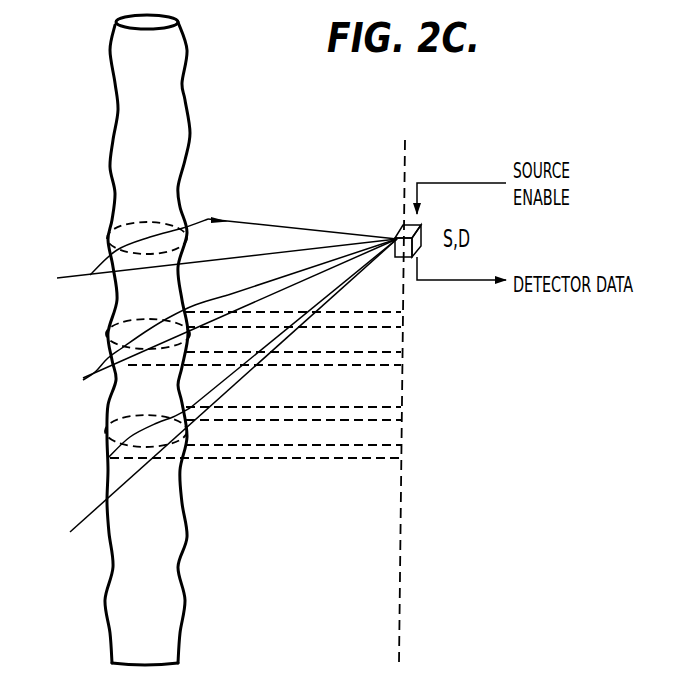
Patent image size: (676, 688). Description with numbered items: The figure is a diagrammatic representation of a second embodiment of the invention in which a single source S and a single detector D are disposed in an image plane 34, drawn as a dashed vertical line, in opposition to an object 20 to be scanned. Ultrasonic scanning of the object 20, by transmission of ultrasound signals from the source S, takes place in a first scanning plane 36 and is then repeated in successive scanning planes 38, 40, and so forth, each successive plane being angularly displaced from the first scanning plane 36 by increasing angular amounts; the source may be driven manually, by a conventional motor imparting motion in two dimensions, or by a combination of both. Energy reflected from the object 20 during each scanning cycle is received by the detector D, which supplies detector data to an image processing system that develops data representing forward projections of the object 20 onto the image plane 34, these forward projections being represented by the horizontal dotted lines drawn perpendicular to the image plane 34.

The object 20 is at (183, 95).
The image plane 34 is at (400, 520).
The first scanning plane 36 is at (258, 228).
The successive scanning plane 38 is at (197, 313).
The successive scanning plane 40 is at (232, 380).